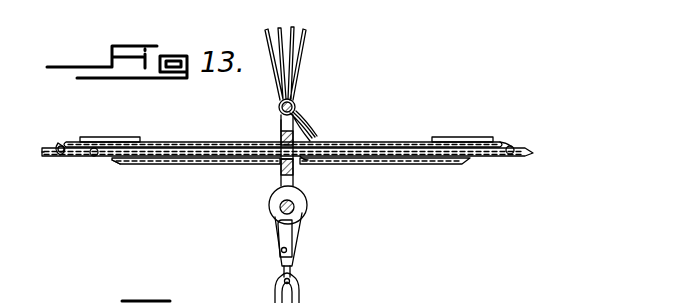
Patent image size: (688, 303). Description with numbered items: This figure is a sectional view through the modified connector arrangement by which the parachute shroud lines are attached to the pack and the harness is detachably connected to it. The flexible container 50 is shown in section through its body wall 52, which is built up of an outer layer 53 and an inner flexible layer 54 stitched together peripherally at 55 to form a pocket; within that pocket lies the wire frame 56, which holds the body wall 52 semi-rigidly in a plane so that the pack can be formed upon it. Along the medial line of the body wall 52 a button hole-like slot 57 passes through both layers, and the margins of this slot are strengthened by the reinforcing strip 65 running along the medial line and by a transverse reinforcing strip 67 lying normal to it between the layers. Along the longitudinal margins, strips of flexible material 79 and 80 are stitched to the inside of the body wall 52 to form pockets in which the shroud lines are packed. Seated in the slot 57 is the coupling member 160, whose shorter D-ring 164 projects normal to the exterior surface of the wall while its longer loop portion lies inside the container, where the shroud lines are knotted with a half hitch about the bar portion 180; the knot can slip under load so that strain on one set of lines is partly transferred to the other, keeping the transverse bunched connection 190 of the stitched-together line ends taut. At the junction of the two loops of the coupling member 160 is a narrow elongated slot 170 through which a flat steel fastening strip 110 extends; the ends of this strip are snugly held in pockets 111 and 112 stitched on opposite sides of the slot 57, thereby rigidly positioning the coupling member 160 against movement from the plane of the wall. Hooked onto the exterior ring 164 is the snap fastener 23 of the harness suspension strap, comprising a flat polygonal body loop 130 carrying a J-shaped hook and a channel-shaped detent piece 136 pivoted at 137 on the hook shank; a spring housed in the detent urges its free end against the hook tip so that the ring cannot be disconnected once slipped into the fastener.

The snap fastener 23 is at (300, 243).
The flexible container 50 is at (528, 157).
The body wall 52 is at (487, 157).
The outer layer 53 is at (133, 161).
The inner flexible layer 54 is at (147, 142).
The peripheral stitching 55 is at (62, 144).
The wire frame 56 is at (505, 146).
The elongated slot 57 is at (279, 137).
The reinforcing strip 65 is at (308, 158).
The transverse reinforcing strip 67 is at (94, 156).
The strip of flexible material 79 is at (446, 142).
The strip of flexible material 80 is at (103, 140).
The steel fastening strip 110 is at (304, 160).
The pocket 111 is at (396, 160).
The pocket 112 is at (175, 166).
The body loop 130 is at (291, 272).
The detent piece 136 is at (280, 231).
The pivot 137 is at (281, 251).
The coupling member 160 is at (279, 130).
The D-ring 164 is at (296, 105).
The narrow elongated slot 170 is at (283, 159).
The bar portion 180 is at (294, 207).
The transverse bunched connection 190 is at (314, 137).